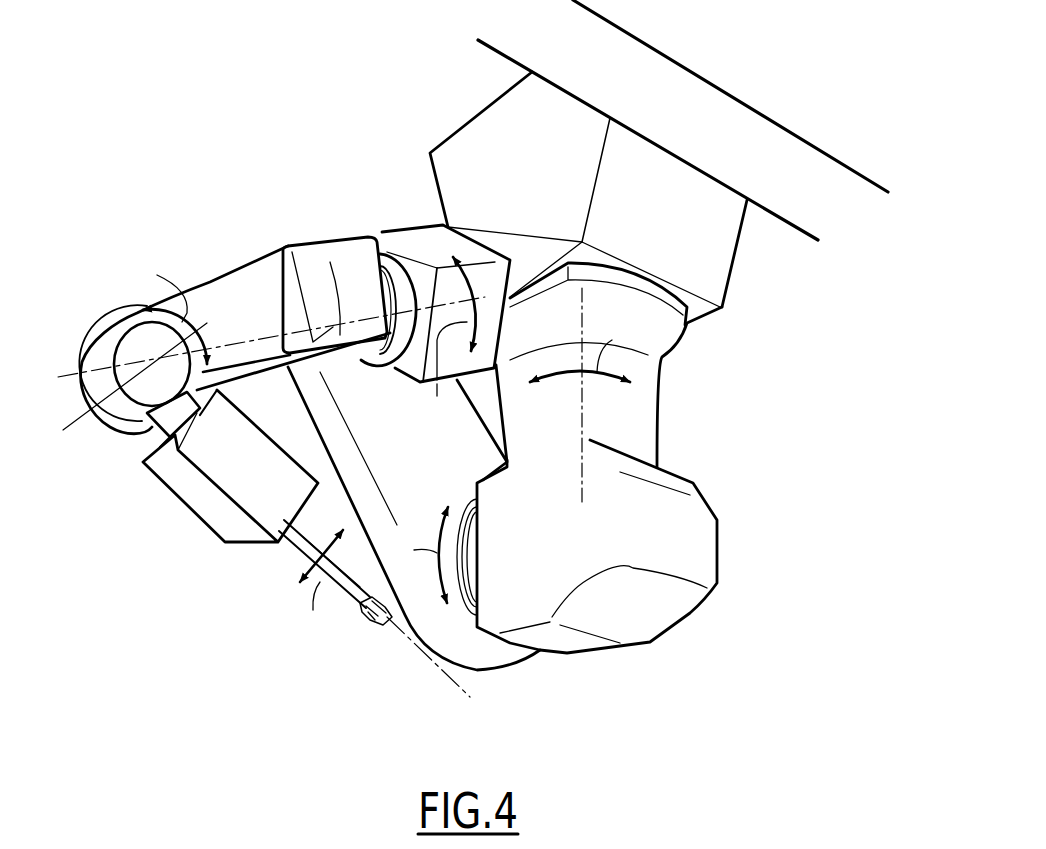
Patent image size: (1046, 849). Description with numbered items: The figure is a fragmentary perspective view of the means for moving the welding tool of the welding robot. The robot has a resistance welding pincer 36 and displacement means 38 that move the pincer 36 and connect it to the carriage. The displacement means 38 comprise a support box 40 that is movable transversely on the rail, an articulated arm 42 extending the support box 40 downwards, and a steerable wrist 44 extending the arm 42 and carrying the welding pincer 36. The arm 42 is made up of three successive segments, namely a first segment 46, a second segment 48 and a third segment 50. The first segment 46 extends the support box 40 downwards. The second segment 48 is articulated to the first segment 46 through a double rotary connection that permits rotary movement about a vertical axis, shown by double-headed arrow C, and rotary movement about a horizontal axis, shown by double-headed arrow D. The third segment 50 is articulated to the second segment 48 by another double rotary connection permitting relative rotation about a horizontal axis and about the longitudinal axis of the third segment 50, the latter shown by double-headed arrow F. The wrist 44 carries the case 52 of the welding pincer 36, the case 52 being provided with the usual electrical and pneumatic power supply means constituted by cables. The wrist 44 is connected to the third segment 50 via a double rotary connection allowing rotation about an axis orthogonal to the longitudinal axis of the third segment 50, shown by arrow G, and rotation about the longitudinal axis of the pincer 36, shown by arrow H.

The resistance welding pincer 36 is at (303, 542).
The displacement means 38 is at (632, 664).
The support box 40 is at (490, 148).
The articulated arm 42 is at (328, 232).
The steerable wrist 44 is at (147, 488).
The first segment 46 is at (645, 413).
The second segment 48 is at (452, 462).
The third segment 50 is at (232, 312).
The case 52 is at (233, 460).